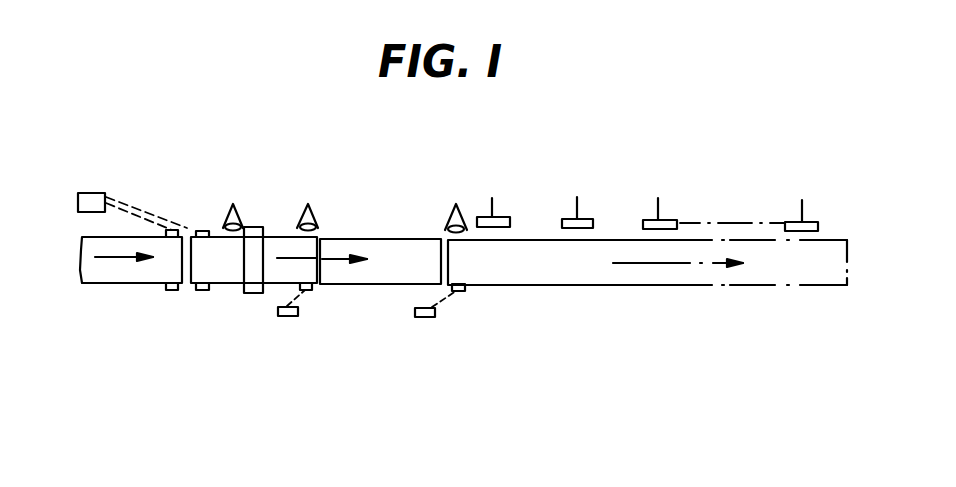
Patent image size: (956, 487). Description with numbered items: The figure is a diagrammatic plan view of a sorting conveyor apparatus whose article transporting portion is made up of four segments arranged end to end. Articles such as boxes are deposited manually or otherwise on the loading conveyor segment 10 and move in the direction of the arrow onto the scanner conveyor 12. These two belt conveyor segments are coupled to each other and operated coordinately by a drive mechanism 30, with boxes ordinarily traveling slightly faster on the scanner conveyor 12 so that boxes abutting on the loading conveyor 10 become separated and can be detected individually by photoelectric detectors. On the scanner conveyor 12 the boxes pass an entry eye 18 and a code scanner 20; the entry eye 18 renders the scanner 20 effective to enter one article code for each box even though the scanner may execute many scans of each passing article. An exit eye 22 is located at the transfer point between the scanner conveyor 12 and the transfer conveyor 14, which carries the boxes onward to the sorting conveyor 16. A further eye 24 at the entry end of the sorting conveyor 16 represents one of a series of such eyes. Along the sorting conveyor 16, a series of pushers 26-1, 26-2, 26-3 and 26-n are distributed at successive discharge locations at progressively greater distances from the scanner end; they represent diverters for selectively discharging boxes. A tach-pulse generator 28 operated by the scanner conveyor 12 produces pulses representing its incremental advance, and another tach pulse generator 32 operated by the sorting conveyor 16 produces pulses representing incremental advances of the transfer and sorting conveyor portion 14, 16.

The loading conveyor segment 10 is at (108, 275).
The scanner conveyor 12 is at (213, 280).
The transfer conveyor 14 is at (350, 280).
The sorting conveyor 16 is at (530, 282).
The entry eye 18 is at (223, 227).
The code scanner 20 is at (254, 228).
The exit eye 22 is at (312, 211).
The eye 24 is at (447, 225).
The pusher 26-1 is at (492, 198).
The pusher 26-2 is at (577, 197).
The pusher 26-3 is at (658, 198).
The pusher 26-n is at (802, 200).
The tach-pulse generator 28 is at (293, 317).
The drive mechanism 30 is at (95, 193).
The tach pulse generator 32 is at (427, 317).